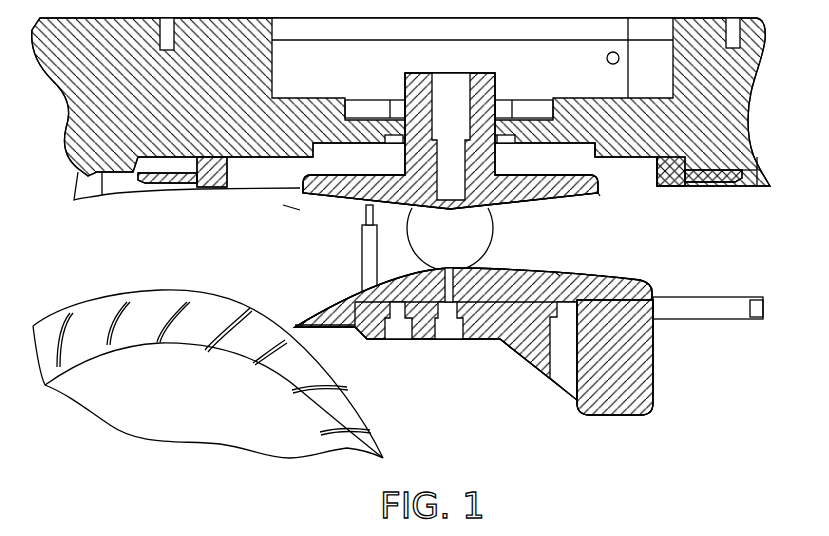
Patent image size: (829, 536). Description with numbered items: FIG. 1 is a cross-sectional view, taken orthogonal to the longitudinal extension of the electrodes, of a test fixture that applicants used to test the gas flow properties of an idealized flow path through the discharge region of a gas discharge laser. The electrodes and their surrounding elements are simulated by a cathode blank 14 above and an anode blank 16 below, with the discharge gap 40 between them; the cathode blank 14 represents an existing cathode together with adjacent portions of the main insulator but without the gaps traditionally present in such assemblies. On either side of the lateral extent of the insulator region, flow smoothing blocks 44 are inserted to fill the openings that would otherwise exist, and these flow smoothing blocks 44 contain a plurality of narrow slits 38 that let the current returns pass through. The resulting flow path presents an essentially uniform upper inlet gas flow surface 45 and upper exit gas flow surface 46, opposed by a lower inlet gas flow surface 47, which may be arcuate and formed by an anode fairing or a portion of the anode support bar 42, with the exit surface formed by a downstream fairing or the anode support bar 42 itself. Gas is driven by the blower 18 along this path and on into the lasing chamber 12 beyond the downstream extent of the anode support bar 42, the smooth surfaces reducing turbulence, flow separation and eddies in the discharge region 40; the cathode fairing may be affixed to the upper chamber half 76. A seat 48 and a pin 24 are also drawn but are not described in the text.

The lasing chamber 12 is at (401, 222).
The cathode blank 14 is at (552, 200).
The anode blank 16 is at (590, 282).
The blower 18 is at (382, 427).
The locating pin 24 is at (362, 272).
The narrow slits 38 is at (268, 188).
The gap between electrodes 40 is at (455, 247).
The anode support bar 42 is at (648, 368).
The flow smoothing blocks 44 is at (180, 196).
The upper inlet gas flow surface 45 is at (320, 208).
The upper exit gas flow surface 46 is at (603, 200).
The lower inlet gas flow surface 47 is at (305, 306).
The ball seat 48 is at (557, 272).
The upper chamber half 76 is at (104, 208).